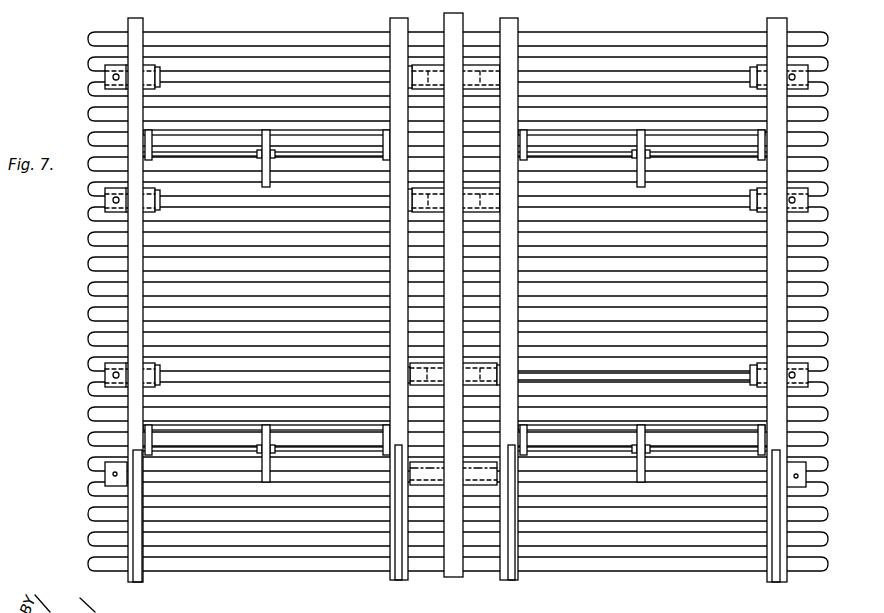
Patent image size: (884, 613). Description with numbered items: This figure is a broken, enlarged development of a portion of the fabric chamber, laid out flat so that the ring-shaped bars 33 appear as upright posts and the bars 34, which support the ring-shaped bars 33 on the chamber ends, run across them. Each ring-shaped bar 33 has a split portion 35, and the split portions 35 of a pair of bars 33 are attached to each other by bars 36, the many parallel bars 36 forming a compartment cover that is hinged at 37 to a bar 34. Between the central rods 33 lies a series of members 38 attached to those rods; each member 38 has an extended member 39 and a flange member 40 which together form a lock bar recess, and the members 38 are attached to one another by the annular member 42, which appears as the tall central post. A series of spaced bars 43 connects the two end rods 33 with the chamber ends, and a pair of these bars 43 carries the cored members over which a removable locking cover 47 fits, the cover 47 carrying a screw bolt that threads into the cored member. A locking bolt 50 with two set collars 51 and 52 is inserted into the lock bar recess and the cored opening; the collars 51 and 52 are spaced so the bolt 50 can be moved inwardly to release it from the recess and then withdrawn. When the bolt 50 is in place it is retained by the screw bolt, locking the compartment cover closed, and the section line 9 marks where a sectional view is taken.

The section line 9- 9 is at (84, 363).
The ring-shaped bar 33 is at (126, 582).
The bar 34 is at (463, 136).
The split portion 35 is at (142, 582).
The bar 36 is at (291, 240).
The hinge 37 is at (272, 156).
The member 38 is at (477, 305).
The extended member 39 is at (470, 365).
The flange member 40 is at (500, 363).
The annular member 42 is at (458, 580).
The spaced bar 43 is at (88, 287).
The removable locking cover 47 is at (765, 362).
The locking bolt 50 is at (665, 375).
The set collar 51 is at (757, 67).
The set collar 52 is at (510, 380).